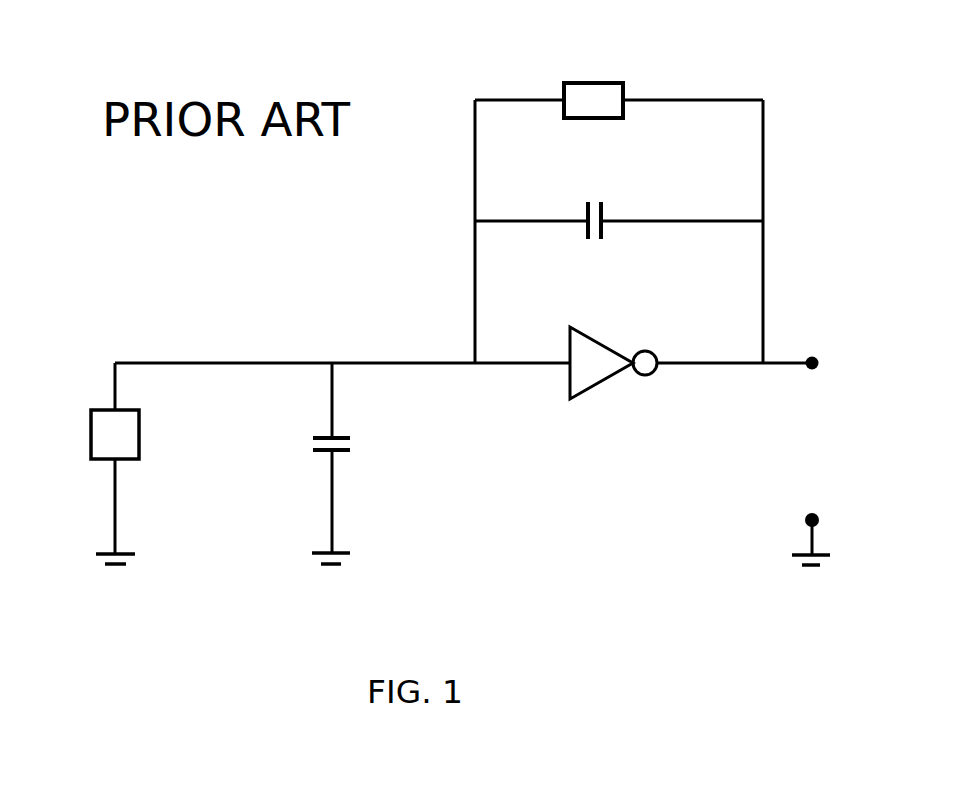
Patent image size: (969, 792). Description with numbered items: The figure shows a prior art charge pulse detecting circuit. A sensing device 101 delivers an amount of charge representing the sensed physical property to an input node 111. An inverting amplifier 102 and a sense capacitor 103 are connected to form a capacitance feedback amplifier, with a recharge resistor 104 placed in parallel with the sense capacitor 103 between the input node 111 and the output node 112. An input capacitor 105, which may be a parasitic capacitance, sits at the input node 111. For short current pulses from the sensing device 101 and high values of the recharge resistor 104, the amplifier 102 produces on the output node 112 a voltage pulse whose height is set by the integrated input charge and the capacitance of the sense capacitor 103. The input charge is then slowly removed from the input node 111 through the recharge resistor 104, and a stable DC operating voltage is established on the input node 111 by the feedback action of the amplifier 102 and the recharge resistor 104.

The sensing device 101 is at (88, 463).
The inverting amplifier 102 is at (613, 370).
The sense capacitor 103 is at (619, 233).
The recharge resistor 104 is at (619, 79).
The input capacitor 105 is at (348, 463).
The input node 111 is at (342, 231).
The output node 112 is at (767, 349).